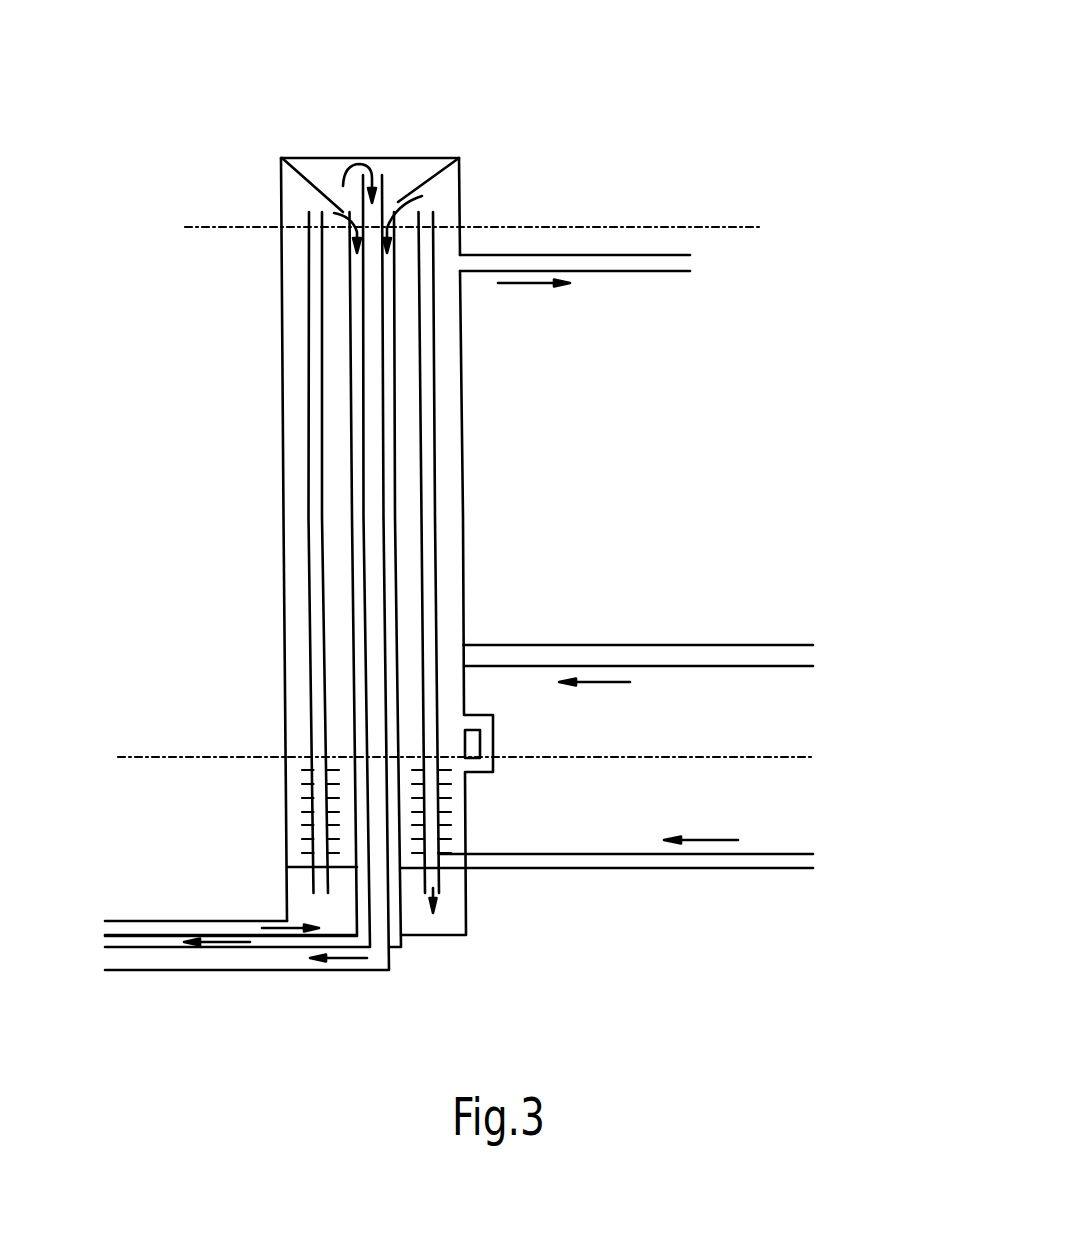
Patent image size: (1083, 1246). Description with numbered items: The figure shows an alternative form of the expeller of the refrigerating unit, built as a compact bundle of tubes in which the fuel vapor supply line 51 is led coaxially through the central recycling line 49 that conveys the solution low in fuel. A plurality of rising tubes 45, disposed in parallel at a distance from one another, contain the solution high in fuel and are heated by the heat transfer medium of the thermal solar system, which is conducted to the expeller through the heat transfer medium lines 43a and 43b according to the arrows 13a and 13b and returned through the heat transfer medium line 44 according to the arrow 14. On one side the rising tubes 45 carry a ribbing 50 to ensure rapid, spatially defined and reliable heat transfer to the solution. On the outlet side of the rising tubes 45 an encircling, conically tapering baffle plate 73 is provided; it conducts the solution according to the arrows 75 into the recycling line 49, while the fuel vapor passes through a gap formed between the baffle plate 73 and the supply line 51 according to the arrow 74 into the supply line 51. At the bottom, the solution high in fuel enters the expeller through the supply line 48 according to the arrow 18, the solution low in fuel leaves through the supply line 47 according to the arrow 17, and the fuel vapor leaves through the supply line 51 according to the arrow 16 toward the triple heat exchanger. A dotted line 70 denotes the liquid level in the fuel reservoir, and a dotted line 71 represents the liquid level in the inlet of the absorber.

The baffle plate 73 is at (325, 180).
The arrow 74 is at (370, 168).
The arrows 75 is at (415, 202).
The dotted line 71 is at (720, 227).
The dotted line 70 is at (733, 757).
The heat transfer medium line 44 is at (640, 265).
The arrow 14 is at (525, 288).
The rising tubes 45 is at (317, 503).
The recycling line 49 is at (355, 410).
The supply line 51 is at (377, 643).
The heat transfer medium line 43b is at (722, 660).
The arrow 13b is at (598, 682).
The heat transfer medium line 43a is at (712, 870).
The arrow 13a is at (700, 840).
The ribbing 50 is at (305, 805).
The supply line 48 is at (130, 930).
The arrow 18 is at (277, 927).
The supply line 47 is at (155, 945).
The arrow 17 is at (222, 946).
The arrow 16 is at (338, 972).